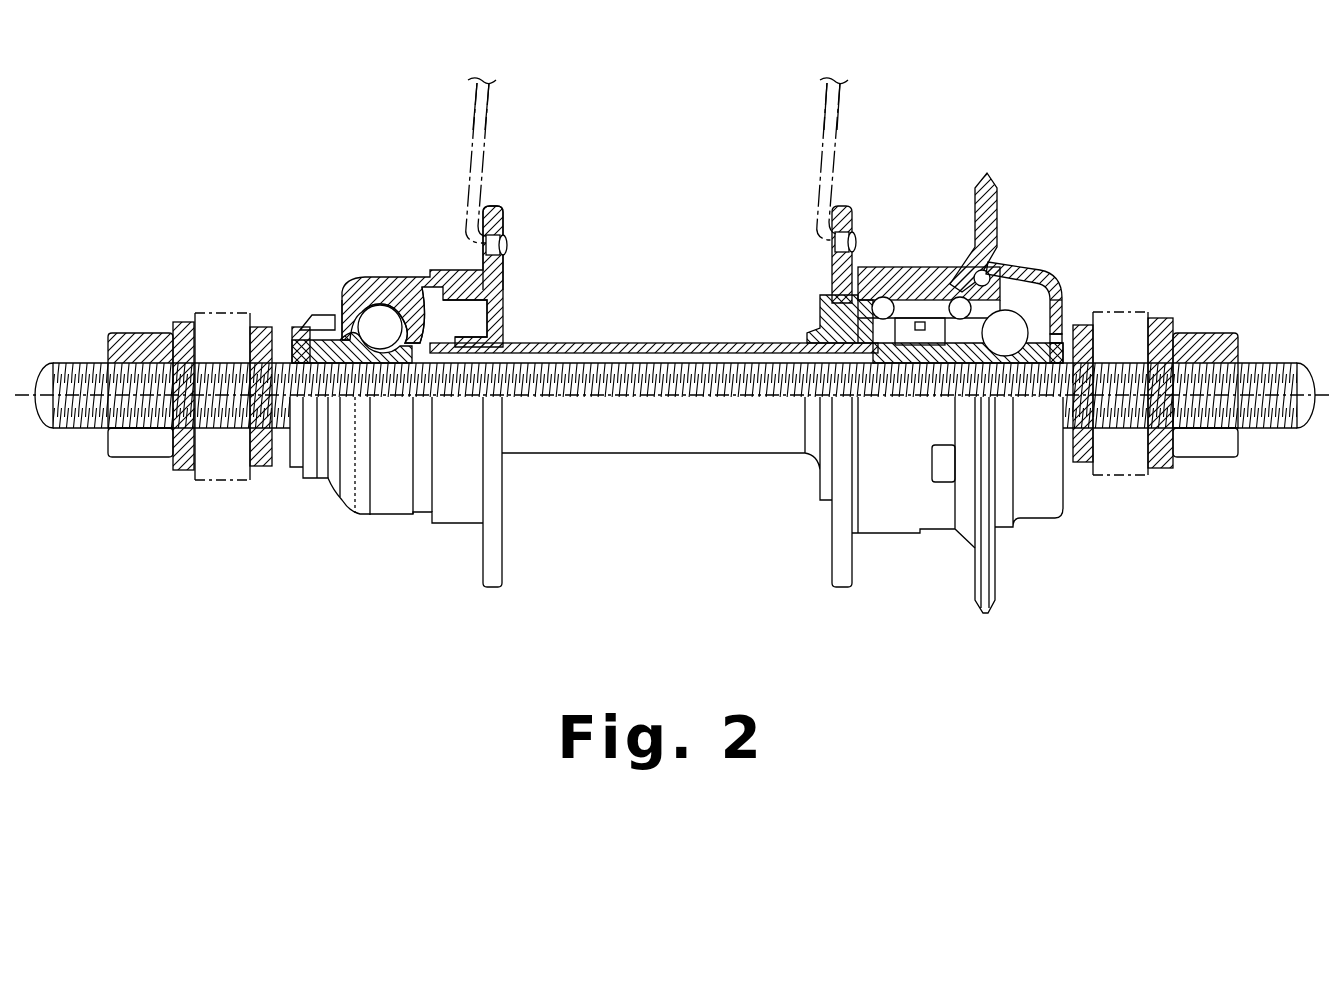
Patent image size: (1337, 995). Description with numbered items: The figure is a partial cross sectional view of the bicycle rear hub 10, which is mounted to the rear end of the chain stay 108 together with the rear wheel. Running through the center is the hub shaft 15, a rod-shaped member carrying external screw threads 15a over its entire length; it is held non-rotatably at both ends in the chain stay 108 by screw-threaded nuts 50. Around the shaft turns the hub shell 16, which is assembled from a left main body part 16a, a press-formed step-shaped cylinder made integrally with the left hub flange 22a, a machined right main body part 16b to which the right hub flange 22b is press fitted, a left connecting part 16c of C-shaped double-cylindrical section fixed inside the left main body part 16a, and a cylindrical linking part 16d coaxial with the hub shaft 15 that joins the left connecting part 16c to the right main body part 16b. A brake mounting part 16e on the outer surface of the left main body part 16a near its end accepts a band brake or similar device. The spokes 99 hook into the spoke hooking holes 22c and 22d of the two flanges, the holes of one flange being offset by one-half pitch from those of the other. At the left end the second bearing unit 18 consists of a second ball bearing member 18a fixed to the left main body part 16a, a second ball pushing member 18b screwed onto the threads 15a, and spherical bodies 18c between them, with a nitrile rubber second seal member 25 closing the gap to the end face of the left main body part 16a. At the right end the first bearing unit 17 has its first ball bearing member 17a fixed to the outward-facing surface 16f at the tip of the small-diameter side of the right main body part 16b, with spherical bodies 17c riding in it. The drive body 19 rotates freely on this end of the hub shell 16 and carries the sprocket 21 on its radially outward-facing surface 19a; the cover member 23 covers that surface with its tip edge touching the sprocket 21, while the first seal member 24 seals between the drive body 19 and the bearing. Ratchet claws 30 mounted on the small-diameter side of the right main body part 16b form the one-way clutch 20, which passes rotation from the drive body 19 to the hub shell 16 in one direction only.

The rear hub 10 is at (674, 222).
The hub shaft 15 is at (622, 382).
The external screw threads 15a is at (1265, 362).
The hub shell 16 is at (683, 372).
The left main body part 16a is at (453, 267).
The right main body part 16b is at (828, 320).
The left connecting part 16c is at (504, 300).
The linking part 16d is at (693, 345).
The brake mounting part 16e is at (373, 280).
The radially outward-facing surface 16f is at (993, 362).
The first bearing unit 17 is at (1039, 404).
The first ball bearing member 17a is at (940, 362).
The spherical bodies 17c is at (1018, 366).
The second bearing unit 18 is at (340, 402).
The second ball bearing member 18a is at (398, 354).
The second ball pushing member 18b is at (318, 352).
The spherical bodies 18c is at (360, 362).
The drive body 19 is at (930, 283).
The radially outward-facing surface 19a is at (1000, 262).
The one-way clutch 20 is at (903, 320).
The sprocket 21 is at (987, 176).
The left hub flange 22a is at (536, 383).
The right hub flange 22b is at (832, 378).
The spoke hooking holes 22c is at (507, 245).
The spoke hooking holes 22d is at (832, 240).
The cover member 23 is at (1060, 285).
The first seal member 24 is at (1063, 300).
The second seal member 25 is at (325, 317).
The ratchet claws 30 is at (835, 397).
The nuts 50 is at (140, 333).
The spokes 99 is at (487, 140).
The chain stay 108 is at (213, 312).